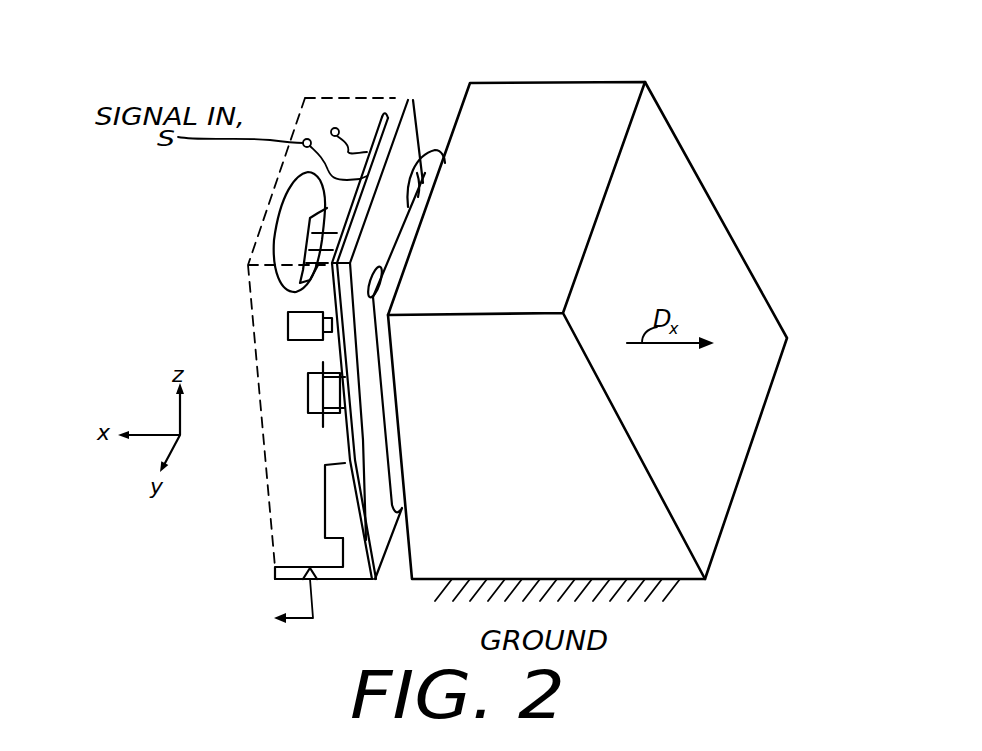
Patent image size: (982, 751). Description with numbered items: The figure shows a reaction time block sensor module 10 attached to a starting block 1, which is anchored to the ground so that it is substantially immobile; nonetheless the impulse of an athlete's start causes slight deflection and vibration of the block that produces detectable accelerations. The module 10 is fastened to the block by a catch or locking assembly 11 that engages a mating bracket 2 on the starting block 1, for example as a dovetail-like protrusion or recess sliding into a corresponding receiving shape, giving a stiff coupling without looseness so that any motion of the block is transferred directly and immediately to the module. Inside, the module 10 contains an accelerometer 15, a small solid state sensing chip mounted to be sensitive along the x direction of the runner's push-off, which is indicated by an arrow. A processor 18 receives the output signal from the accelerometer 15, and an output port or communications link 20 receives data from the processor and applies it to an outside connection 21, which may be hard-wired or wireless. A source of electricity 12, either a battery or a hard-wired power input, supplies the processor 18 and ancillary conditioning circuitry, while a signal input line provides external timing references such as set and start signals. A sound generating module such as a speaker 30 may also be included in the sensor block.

The starting block 1 is at (528, 497).
The mating bracket 2 is at (370, 287).
The block sensor module 10 is at (224, 68).
The catch or locking assembly 11 is at (407, 217).
The source of electricity 12 is at (338, 128).
The accelerometer 15 is at (308, 392).
The processor 18 is at (288, 323).
The output port or communications link 20 is at (333, 503).
The outside connection 21 is at (275, 568).
The speaker 30 is at (285, 212).